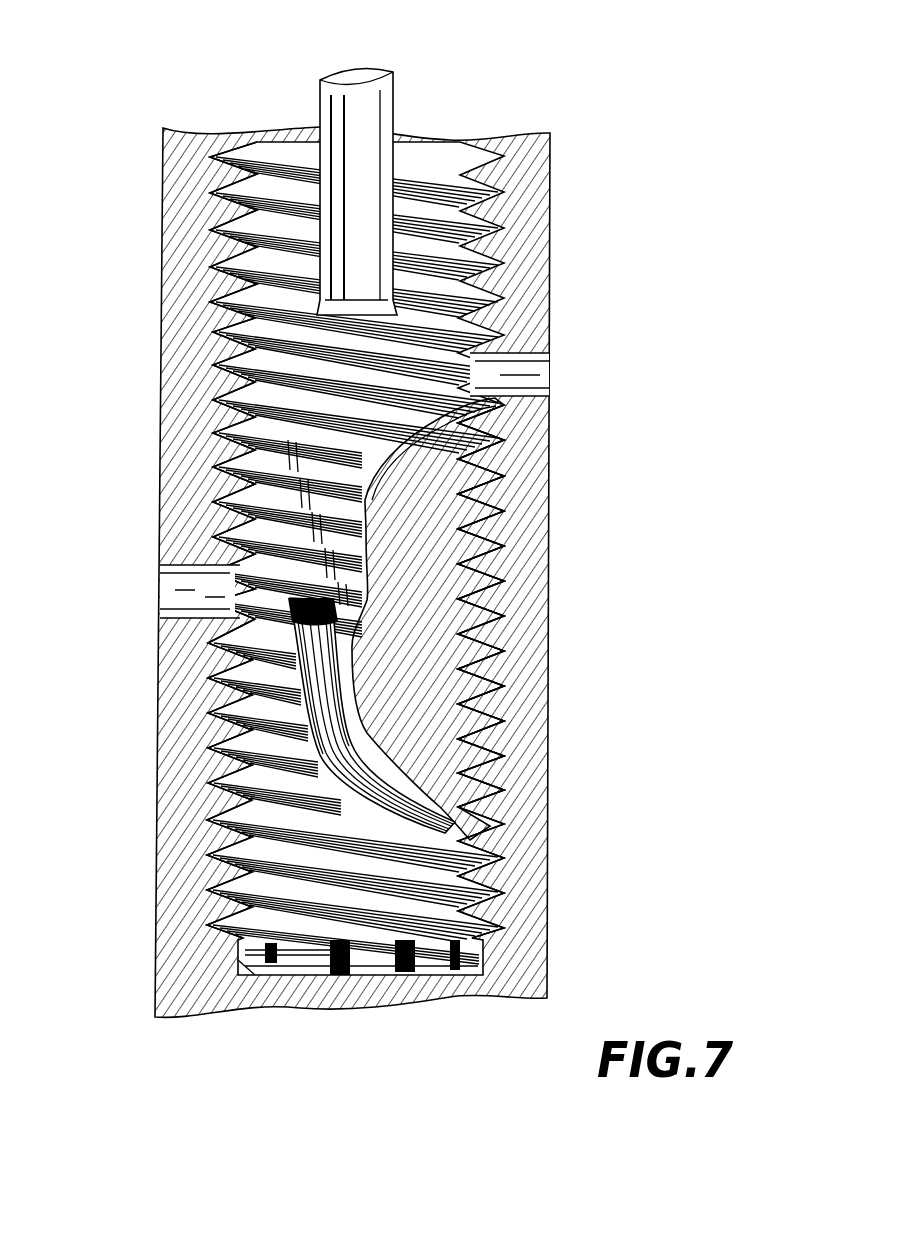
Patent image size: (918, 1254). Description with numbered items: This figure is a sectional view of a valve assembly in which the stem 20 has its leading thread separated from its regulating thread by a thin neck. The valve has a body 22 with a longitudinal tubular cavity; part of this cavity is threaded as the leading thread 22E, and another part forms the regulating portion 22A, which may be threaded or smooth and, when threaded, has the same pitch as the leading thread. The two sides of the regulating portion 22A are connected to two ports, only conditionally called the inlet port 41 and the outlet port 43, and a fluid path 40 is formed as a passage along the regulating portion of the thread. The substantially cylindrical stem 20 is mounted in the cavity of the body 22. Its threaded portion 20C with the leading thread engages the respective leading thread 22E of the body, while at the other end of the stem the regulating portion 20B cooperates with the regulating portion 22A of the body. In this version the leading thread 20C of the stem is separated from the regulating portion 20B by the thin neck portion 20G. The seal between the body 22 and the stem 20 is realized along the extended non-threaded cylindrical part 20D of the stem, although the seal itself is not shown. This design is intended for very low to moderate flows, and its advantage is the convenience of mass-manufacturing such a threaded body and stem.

The stem 20 is at (431, 492).
The non-threaded cylindrical part of the stem 20D is at (367, 117).
The regulating portion of the stem 20B is at (553, 630).
The threaded portion of the stem with leading thread 20C is at (487, 825).
The thin neck portion of the stem 20G is at (213, 795).
The body of the valve 22 is at (537, 187).
The regulating portion of the body 22A is at (553, 538).
The threaded part of the body with leading thread 22E is at (212, 263).
The fluid path 40 is at (217, 480).
The inlet port 41 is at (161, 588).
The outlet port 43 is at (553, 362).